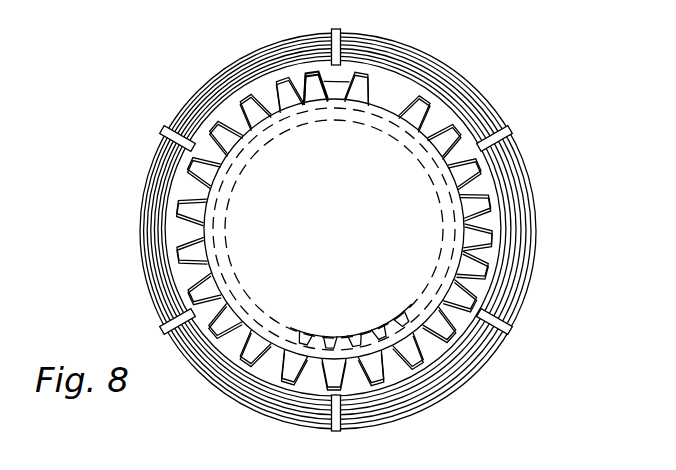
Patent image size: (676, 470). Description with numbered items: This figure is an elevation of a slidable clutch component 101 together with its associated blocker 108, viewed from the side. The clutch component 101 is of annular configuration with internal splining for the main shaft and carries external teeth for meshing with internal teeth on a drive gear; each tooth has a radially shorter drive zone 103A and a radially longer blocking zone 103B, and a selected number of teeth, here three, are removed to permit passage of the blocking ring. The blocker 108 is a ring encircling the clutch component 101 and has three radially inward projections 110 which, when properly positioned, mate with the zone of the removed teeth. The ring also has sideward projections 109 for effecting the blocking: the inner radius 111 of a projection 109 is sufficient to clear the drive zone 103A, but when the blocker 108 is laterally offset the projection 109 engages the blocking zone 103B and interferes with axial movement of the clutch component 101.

The clutch component 101 is at (341, 198).
The drive zone 103A is at (245, 103).
The blocking zone 103B is at (215, 133).
The blocker 108 is at (453, 72).
The sideward projections 109 is at (370, 70).
The radially inward projections 110 is at (352, 73).
The inner radius 111 is at (289, 82).